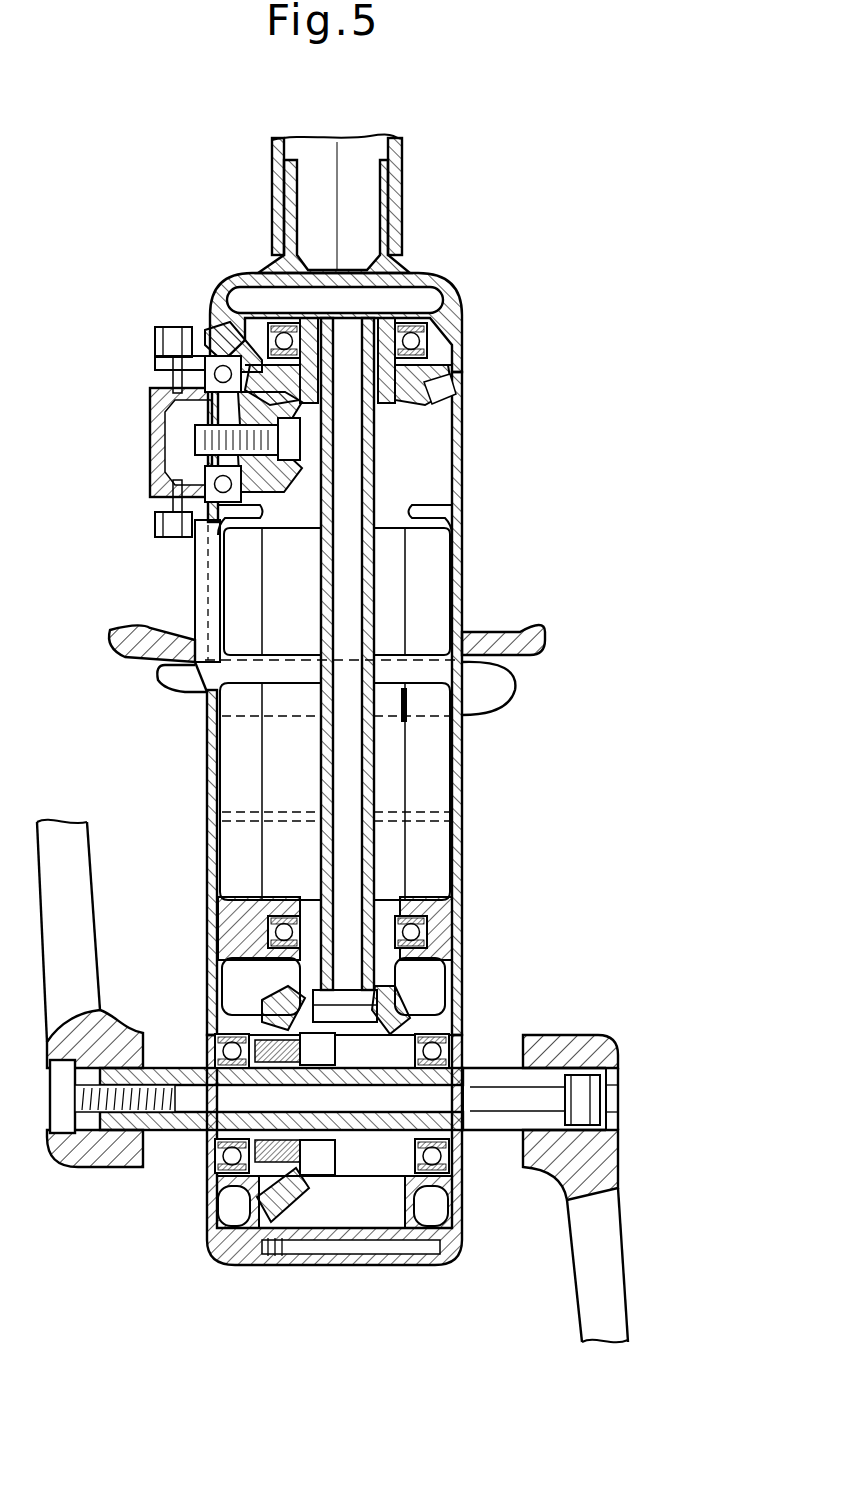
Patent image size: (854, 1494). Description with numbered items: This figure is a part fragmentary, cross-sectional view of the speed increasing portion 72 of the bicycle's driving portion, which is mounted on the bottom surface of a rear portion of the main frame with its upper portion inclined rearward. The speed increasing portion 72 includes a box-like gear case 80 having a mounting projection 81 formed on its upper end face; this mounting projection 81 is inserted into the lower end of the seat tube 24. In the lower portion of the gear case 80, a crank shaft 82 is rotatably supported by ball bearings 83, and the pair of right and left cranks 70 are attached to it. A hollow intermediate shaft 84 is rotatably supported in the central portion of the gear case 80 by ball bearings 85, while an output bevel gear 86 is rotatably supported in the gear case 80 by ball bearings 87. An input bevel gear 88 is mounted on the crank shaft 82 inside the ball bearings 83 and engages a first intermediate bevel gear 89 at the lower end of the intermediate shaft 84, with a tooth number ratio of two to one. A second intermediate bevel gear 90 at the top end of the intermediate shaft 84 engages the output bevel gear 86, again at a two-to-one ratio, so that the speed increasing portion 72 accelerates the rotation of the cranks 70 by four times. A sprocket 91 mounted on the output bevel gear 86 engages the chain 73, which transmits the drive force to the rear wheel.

The seat tube 24 is at (400, 205).
The mounting projection 81 is at (390, 228).
The gear case 80 is at (462, 580).
The speed increasing portion 72 is at (484, 508).
The intermediate shaft 84 is at (375, 820).
The ball bearings 85 is at (417, 350).
The output bevel gear 86 is at (260, 430).
The ball bearings 87 is at (215, 338).
The input bevel gear 88 is at (204, 973).
The first intermediate bevel gear 89 is at (460, 928).
The second intermediate bevel gear 90 is at (440, 392).
The sprocket 91 is at (160, 458).
The chain 73 is at (156, 340).
The crank shaft 82 is at (487, 1080).
The ball bearings 83 is at (438, 1010).
The cranks 70 is at (118, 1033).